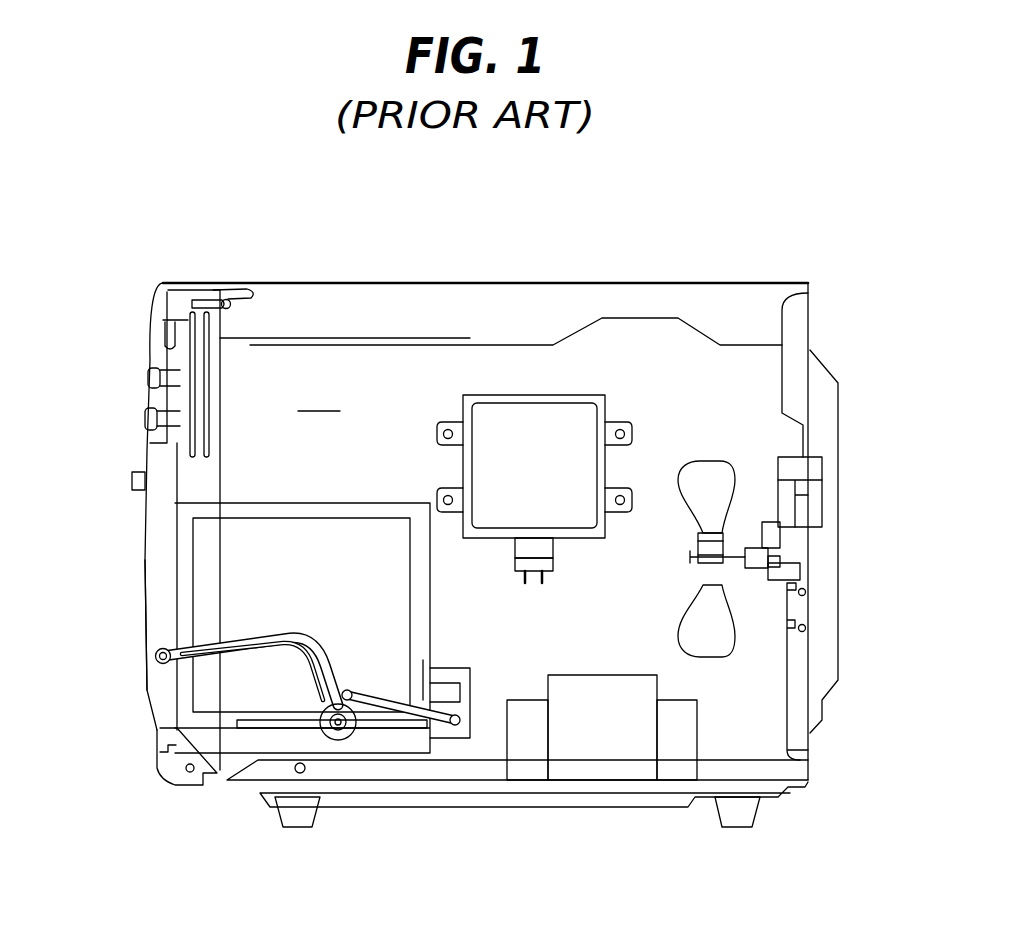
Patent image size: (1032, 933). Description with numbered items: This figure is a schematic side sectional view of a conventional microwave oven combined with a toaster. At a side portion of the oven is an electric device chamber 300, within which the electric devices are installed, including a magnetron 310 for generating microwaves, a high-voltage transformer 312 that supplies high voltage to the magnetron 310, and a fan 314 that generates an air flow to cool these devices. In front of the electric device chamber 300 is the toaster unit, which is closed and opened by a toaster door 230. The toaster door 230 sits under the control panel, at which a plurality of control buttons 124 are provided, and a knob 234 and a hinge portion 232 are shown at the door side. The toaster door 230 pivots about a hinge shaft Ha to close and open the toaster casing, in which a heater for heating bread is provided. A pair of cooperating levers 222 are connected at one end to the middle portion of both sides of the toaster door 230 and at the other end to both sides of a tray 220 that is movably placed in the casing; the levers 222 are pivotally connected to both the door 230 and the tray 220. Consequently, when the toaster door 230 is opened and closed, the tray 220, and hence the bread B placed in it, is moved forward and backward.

The electric device chamber 300 is at (491, 555).
The magnetron 310 is at (540, 418).
The high voltage transformer 312 is at (608, 755).
The fan 314 is at (718, 605).
The control buttons 124 is at (146, 381).
The door knob 234 is at (132, 483).
The toaster door 230 is at (147, 575).
The door hinge 232 is at (193, 737).
The hinge shaft Ha is at (185, 768).
The cooperating levers 222 is at (245, 636).
The tray 220 is at (248, 723).
The bread B is at (245, 550).